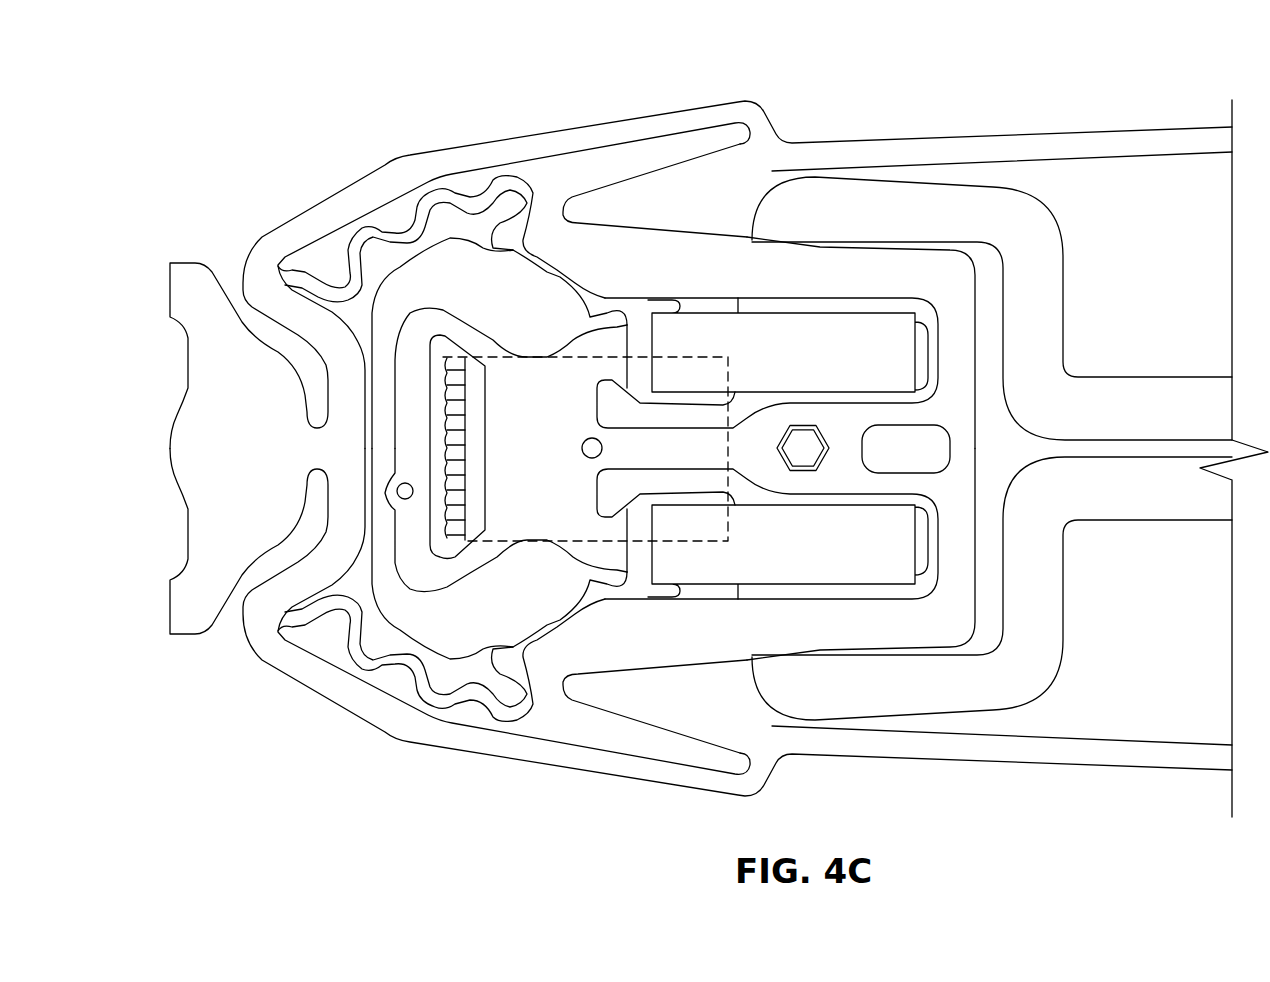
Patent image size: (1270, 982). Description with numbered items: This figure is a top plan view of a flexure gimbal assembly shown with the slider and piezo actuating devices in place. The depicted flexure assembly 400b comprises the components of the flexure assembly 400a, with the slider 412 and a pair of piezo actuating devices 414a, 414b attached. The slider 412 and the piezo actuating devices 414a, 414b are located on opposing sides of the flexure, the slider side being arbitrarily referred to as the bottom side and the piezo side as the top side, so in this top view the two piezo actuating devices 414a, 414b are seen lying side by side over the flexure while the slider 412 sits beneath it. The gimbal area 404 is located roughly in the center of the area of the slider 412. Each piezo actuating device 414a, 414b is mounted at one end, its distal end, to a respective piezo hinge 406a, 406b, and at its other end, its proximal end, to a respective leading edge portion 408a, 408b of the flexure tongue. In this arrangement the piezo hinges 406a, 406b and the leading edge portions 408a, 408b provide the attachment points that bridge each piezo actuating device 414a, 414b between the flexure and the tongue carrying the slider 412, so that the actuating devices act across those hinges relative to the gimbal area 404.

The flexure assembly 400a is at (340, 203).
The flexure assembly 400b is at (462, 113).
The gimbal area 404 is at (592, 458).
The piezo hinge 406a is at (647, 547).
The piezo hinge 406b is at (640, 323).
The leading edge portion 408a is at (938, 548).
The leading edge portion 408b is at (937, 352).
The slider 412 is at (473, 507).
The piezo actuating device 414a is at (788, 552).
The piezo actuating device 414b is at (788, 345).